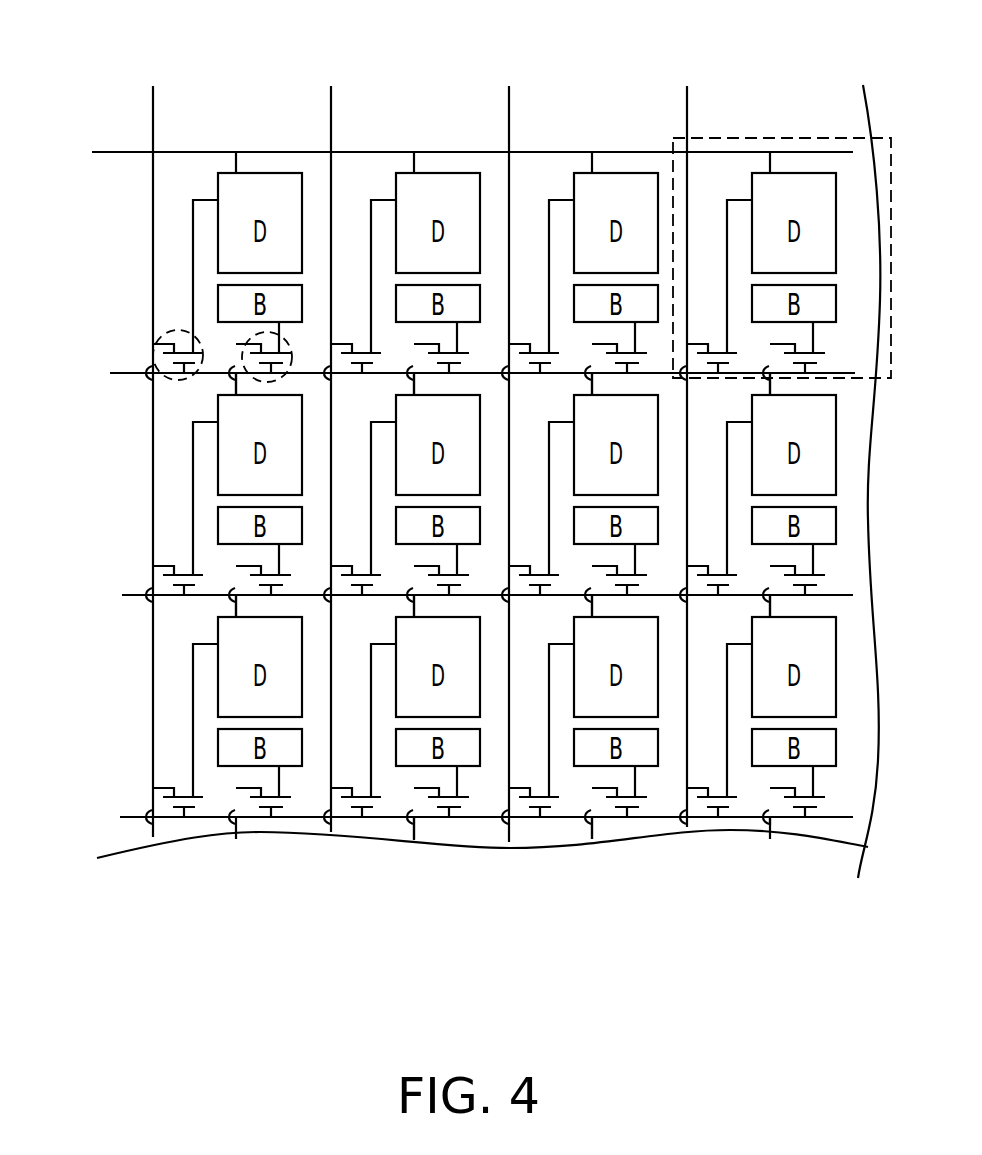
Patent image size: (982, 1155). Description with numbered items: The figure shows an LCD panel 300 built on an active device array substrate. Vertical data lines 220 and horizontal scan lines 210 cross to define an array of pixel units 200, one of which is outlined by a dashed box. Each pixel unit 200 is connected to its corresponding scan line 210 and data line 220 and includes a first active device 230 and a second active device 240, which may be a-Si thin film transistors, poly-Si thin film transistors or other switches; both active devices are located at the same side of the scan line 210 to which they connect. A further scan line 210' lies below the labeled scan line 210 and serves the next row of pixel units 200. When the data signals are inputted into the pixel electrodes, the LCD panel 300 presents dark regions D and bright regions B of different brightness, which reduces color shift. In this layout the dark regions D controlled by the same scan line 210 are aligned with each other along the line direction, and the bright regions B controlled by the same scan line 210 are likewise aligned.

The pixel unit 200 is at (768, 138).
The data line 220 is at (153, 130).
The scan line 210 is at (452, 364).
The adjacent scan line 210' is at (452, 582).
The first active device 230 is at (177, 333).
The second active device 240 is at (228, 382).
The LCD panel 300 is at (850, 960).